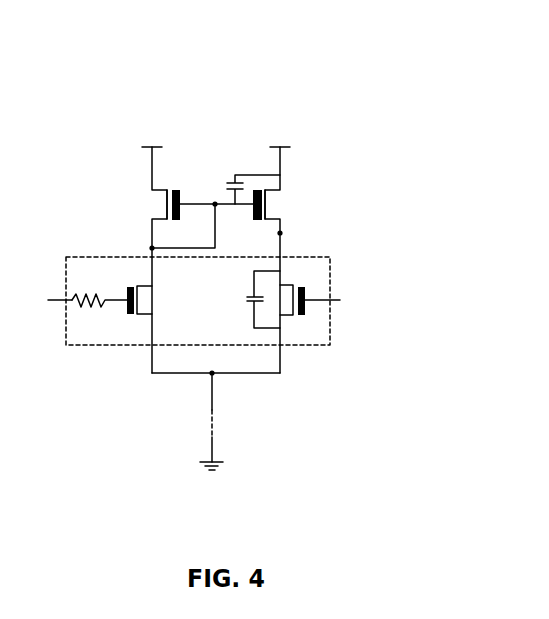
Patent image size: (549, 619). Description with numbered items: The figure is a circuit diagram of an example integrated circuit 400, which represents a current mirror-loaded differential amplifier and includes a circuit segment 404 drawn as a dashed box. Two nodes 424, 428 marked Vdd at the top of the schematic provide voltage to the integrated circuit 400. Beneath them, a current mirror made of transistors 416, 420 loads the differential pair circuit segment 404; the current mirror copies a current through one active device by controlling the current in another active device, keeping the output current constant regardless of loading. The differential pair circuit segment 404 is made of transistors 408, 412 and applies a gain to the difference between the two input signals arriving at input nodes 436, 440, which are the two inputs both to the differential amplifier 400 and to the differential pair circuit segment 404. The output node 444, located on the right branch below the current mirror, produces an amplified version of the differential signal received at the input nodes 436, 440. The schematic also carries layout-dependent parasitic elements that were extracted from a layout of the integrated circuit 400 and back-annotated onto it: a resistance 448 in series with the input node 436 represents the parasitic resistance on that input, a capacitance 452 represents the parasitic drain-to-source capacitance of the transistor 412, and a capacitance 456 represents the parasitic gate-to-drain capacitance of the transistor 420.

The integrated circuit 400 is at (248, 80).
The circuit segment 404 is at (103, 339).
The transistor 408 is at (140, 294).
The transistor 412 is at (305, 316).
The transistor 416 is at (167, 204).
The transistor 420 is at (267, 197).
The node 424 is at (143, 148).
The node 428 is at (295, 147).
The input node 436 is at (46, 301).
The input node 440 is at (340, 301).
The output node 444 is at (280, 233).
The resistance 448 is at (99, 291).
The capacitance 452 is at (247, 299).
The capacitance 456 is at (241, 185).